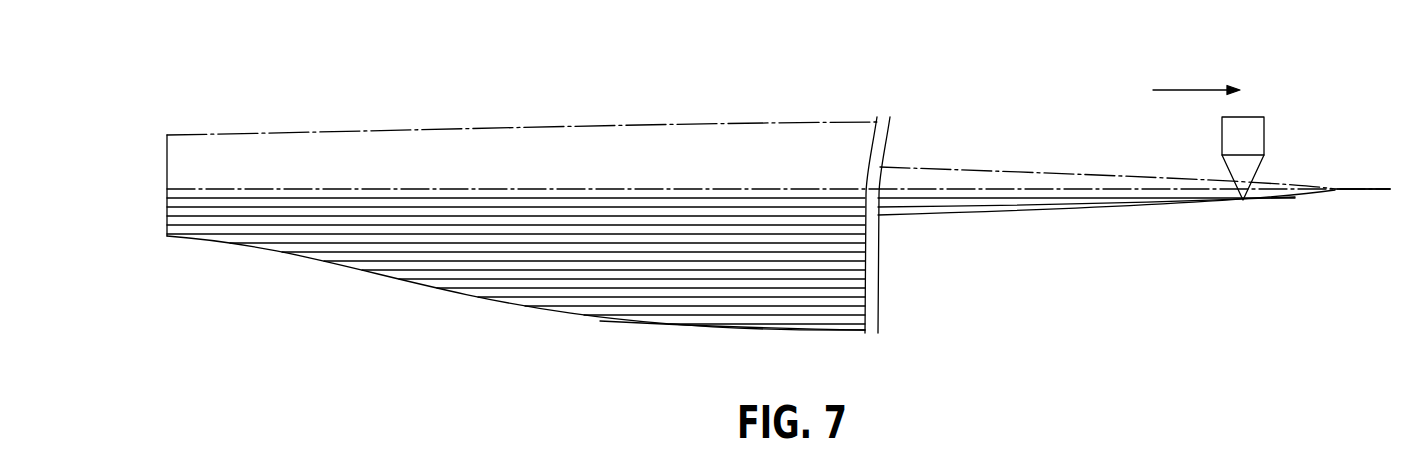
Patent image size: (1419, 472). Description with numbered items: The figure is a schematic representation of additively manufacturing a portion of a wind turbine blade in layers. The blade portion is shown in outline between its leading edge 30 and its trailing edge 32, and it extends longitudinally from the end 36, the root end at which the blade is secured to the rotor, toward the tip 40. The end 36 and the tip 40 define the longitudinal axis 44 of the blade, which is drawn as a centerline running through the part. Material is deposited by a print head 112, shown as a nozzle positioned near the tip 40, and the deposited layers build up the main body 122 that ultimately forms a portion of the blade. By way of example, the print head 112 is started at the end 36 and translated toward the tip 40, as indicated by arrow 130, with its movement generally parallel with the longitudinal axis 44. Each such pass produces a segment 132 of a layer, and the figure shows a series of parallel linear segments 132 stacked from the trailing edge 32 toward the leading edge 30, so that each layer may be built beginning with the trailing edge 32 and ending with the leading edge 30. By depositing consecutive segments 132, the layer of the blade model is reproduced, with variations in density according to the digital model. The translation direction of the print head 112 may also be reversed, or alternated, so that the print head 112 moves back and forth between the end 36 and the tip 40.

The leading edge 30 is at (534, 126).
The trailing edge 32 is at (681, 325).
The end 36 is at (167, 180).
The tip 40 is at (1333, 190).
The longitudinal axis 44 is at (1362, 192).
The print head 112 is at (1264, 132).
The main body 122 is at (313, 258).
The arrow 130 is at (1190, 89).
The segment 132 is at (167, 221).